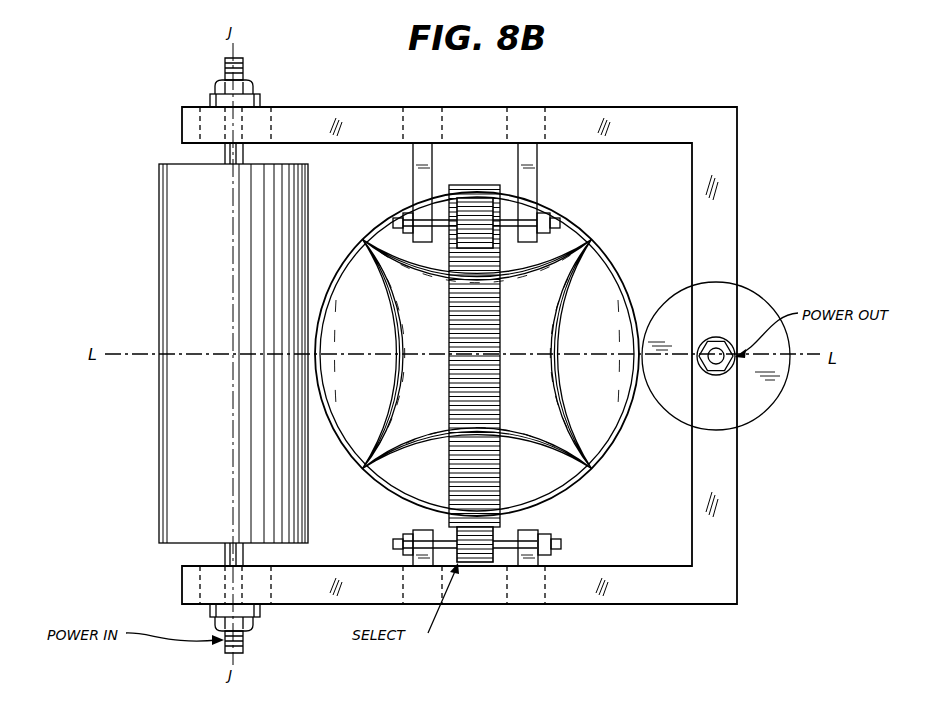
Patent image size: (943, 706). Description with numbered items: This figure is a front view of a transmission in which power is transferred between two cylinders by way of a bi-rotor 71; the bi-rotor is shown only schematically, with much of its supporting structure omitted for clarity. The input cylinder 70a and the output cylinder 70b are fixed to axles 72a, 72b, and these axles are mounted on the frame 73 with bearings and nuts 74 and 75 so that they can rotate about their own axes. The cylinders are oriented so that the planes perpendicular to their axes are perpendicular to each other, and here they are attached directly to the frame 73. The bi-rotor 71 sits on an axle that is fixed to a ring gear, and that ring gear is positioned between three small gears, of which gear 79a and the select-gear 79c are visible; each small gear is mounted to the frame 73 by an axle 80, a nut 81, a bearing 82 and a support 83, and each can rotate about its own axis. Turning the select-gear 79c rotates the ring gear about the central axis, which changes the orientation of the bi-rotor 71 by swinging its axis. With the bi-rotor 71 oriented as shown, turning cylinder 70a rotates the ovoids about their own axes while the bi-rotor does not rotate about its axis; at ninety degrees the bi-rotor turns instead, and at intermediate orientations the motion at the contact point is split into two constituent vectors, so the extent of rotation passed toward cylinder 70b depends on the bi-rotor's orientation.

The cylinder 70a is at (178, 253).
The cylinder 70b is at (781, 393).
The bi-rotor 71 is at (645, 300).
The axle 72a is at (228, 154).
The axle 72b is at (720, 345).
The frame 73 is at (185, 113).
The nut 74 is at (262, 103).
The nut 75 is at (222, 90).
The small gear 79a is at (472, 210).
The select-gear 79c is at (483, 562).
The axle 80 is at (505, 218).
The nut 81 is at (398, 222).
The bearing 82 is at (416, 220).
The support 83 is at (420, 163).